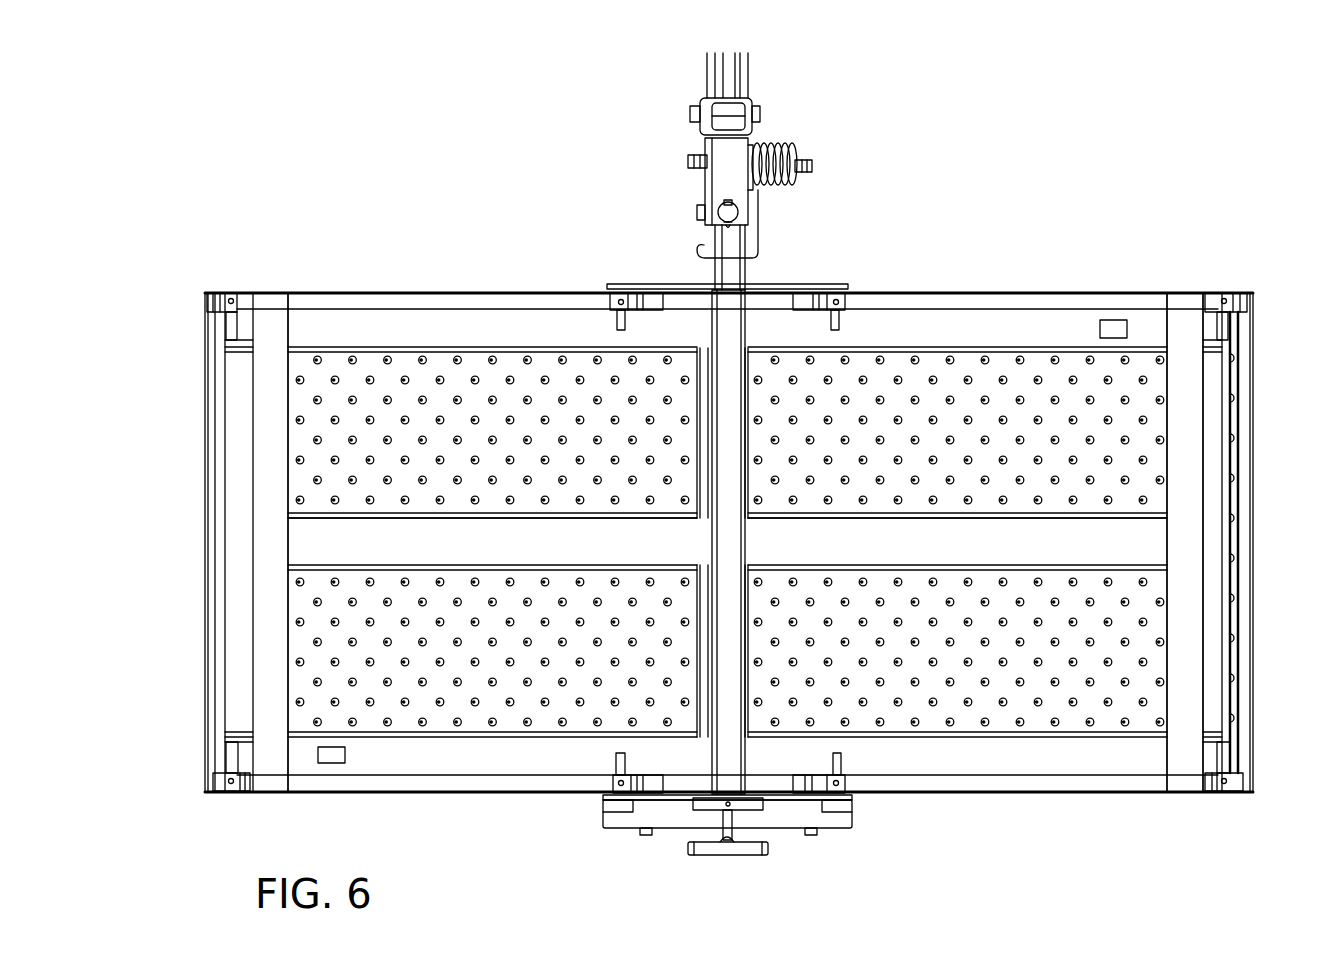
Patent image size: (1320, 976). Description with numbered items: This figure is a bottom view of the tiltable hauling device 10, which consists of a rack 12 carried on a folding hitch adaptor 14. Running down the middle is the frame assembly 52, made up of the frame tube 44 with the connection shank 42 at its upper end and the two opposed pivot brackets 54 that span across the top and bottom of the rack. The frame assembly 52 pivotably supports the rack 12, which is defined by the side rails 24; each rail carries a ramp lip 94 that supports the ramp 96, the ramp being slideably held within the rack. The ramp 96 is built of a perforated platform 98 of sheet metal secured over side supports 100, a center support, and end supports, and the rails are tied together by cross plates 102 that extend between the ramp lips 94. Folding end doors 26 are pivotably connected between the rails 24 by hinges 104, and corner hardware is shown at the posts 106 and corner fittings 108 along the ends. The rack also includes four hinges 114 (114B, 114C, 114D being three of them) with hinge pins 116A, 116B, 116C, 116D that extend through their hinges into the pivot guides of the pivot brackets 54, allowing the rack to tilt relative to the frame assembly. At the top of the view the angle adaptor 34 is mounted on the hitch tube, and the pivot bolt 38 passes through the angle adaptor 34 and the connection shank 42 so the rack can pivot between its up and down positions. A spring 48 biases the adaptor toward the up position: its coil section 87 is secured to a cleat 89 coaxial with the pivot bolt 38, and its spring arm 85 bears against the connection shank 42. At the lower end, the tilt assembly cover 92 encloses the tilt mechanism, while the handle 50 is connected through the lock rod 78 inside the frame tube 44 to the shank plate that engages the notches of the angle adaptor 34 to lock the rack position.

The tiltable hauling device 10 is at (343, 140).
The rack 12 is at (1015, 290).
The folding hitch adaptor 14 is at (645, 110).
The rails 24 is at (905, 292).
The folding end doors 26 is at (220, 402).
The angle adaptor 34 is at (707, 128).
The pivot bolt 38 is at (690, 160).
The connection shank 42 is at (722, 180).
The frame tube 44 is at (730, 520).
The spring 48 is at (770, 192).
The handle 50 is at (724, 848).
The frame assembly 52 is at (782, 490).
The pivot brackets 54 is at (655, 284).
The lock rod 78 is at (722, 815).
The spring arm 85 is at (760, 235).
The coil section 87 is at (775, 150).
The cleat 89 is at (800, 148).
The tilt assembly cover 92 is at (832, 833).
The ramp lip 94 is at (455, 300).
The ramp 96 is at (1060, 330).
The platform 98 is at (420, 365).
The side supports 100 is at (490, 330).
The cross plates 102 is at (320, 545).
The hinges 104 is at (240, 585).
The upright post 106 is at (268, 330).
The corner bracket 108 is at (228, 288).
The hinges 114 is at (848, 765).
The hinge 114B is at (612, 765).
The hinge 114C is at (610, 318).
The hinge 114D is at (850, 318).
The hinge pin 116A is at (843, 785).
The hinge pin 116B is at (625, 792).
The hinge pin 116C is at (625, 302).
The hinge pin 116D is at (842, 292).